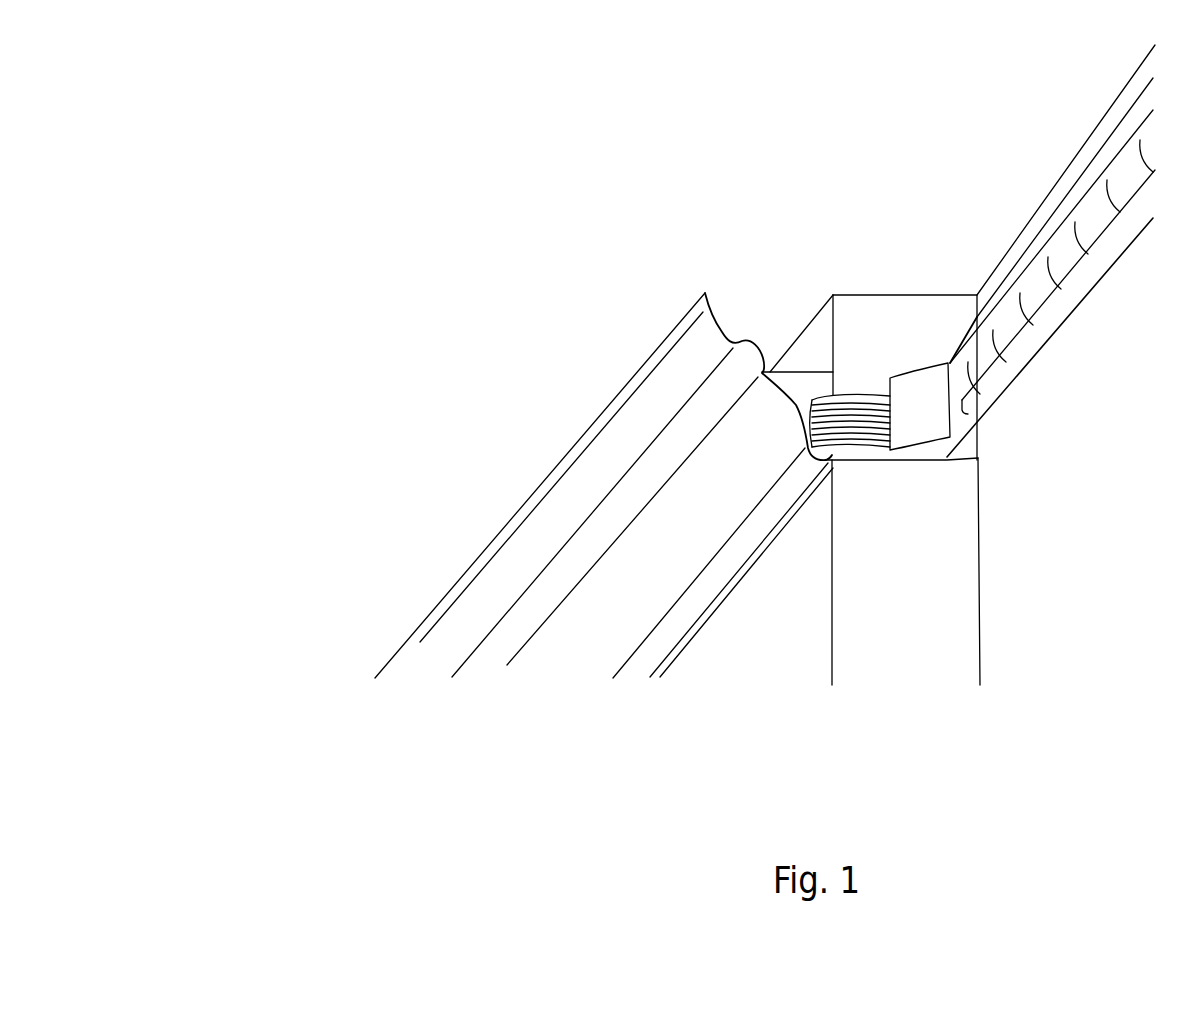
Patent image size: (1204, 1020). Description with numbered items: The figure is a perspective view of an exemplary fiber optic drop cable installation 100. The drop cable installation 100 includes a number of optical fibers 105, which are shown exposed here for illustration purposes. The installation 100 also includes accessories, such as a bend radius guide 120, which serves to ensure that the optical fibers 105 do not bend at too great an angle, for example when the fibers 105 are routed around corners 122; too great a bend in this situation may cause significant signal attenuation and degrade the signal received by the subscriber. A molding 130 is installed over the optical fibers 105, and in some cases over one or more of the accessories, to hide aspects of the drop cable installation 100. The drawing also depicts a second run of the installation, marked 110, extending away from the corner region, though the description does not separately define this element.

The fiber optic drop cable installation 100 is at (691, 369).
The optical fibers 105 is at (845, 407).
The second rail 110 is at (1048, 330).
The bend radius guide 120 is at (922, 427).
The corners 122 is at (972, 612).
The molding 130 is at (543, 465).